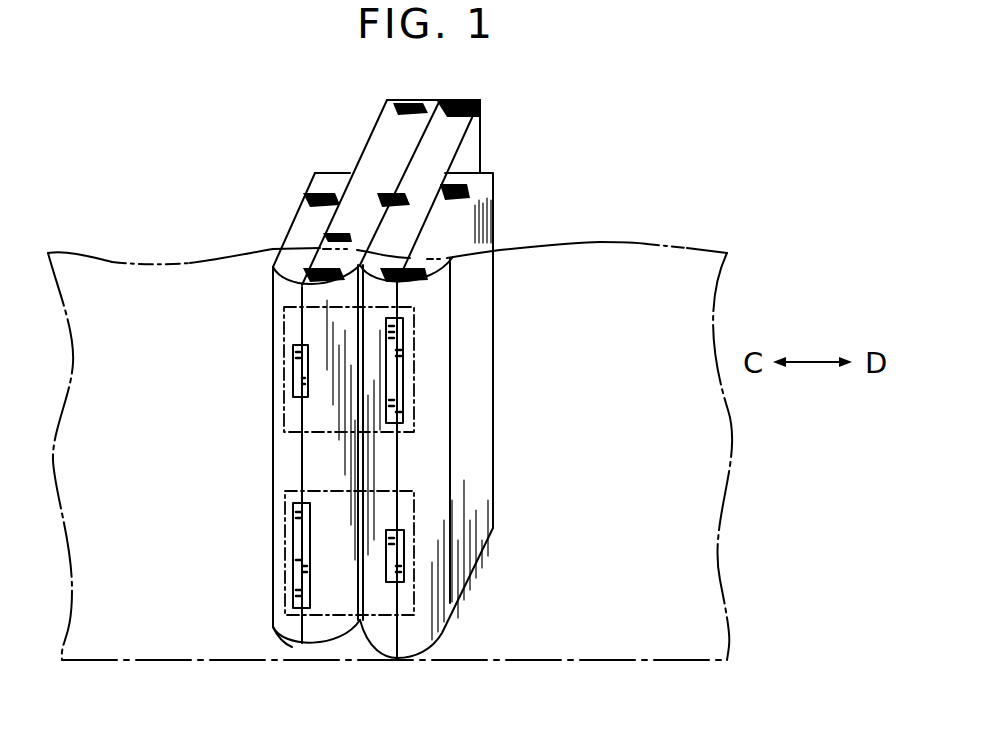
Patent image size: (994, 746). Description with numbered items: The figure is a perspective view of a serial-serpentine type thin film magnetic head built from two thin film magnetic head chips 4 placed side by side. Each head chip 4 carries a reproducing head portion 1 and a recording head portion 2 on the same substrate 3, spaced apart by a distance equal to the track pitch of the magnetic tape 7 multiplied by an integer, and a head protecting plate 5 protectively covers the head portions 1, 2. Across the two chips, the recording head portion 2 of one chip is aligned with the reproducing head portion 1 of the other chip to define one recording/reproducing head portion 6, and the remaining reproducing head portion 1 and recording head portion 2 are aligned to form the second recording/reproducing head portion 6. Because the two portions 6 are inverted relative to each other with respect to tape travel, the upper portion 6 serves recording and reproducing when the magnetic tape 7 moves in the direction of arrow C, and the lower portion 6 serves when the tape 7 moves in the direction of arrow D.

The reproducing head portion 1 is at (297, 370).
The recording head portion 2 is at (403, 358).
The substrate 3 is at (322, 633).
The thin film magnetic head chip 4 is at (300, 655).
The head protecting plate 5 is at (273, 625).
The recording/reproducing head portion 6 is at (282, 419).
The magnetic tape 7 is at (683, 260).